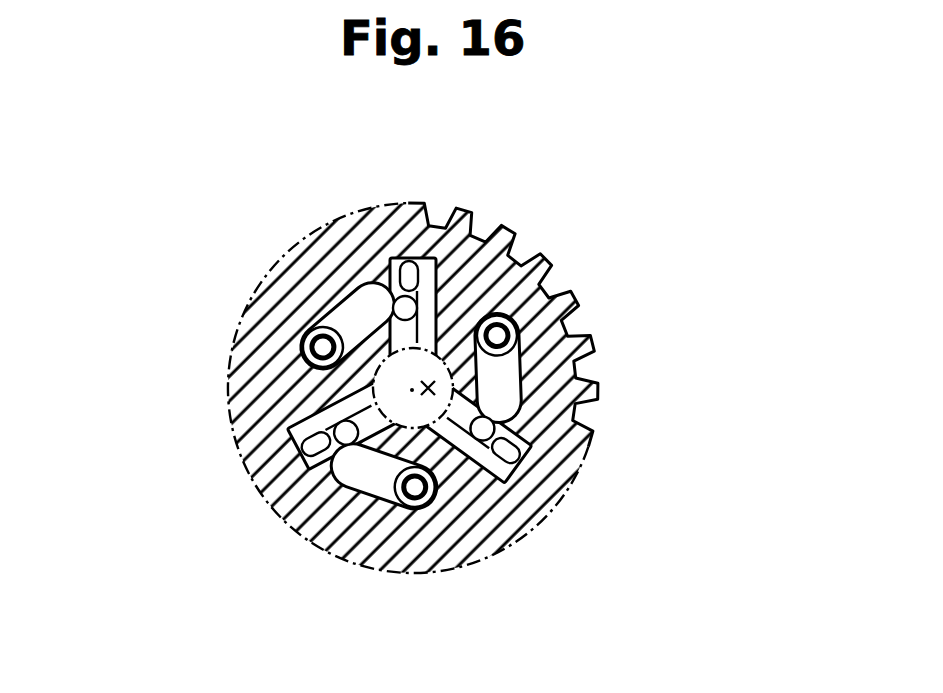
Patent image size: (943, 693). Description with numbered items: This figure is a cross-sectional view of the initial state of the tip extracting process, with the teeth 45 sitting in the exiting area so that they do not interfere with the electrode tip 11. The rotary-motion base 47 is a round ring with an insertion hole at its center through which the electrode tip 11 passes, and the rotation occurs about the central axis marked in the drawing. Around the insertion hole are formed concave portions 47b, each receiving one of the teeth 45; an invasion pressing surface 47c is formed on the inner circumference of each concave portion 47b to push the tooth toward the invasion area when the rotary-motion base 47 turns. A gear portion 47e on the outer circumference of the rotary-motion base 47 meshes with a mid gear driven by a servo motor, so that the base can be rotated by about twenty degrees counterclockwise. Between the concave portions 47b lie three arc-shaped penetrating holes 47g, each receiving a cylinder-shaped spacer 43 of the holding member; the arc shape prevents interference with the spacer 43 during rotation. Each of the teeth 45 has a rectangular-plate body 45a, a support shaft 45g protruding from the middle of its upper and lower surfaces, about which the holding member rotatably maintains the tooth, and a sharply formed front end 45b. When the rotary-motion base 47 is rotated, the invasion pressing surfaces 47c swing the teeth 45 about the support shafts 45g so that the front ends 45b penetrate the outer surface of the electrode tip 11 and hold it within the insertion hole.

The electrode tip 11 is at (503, 478).
The spacer 43 is at (257, 307).
The teeth 45 is at (411, 278).
The body 45a is at (411, 364).
The front end 45b is at (337, 313).
The support shaft 45g is at (397, 288).
The rotary-motion base 47 is at (243, 350).
The concave portion 47b is at (478, 252).
The invasion pressing surface 47c is at (535, 262).
The gear portion 47e is at (548, 263).
The penetrating hole 47g is at (320, 295).